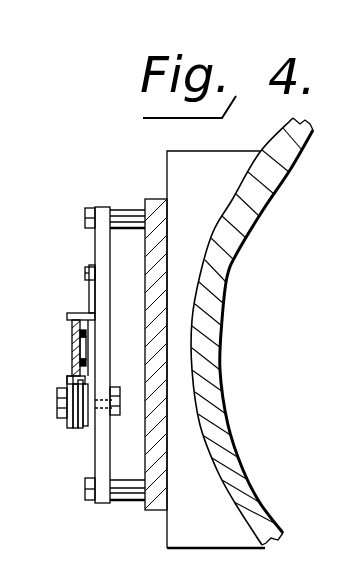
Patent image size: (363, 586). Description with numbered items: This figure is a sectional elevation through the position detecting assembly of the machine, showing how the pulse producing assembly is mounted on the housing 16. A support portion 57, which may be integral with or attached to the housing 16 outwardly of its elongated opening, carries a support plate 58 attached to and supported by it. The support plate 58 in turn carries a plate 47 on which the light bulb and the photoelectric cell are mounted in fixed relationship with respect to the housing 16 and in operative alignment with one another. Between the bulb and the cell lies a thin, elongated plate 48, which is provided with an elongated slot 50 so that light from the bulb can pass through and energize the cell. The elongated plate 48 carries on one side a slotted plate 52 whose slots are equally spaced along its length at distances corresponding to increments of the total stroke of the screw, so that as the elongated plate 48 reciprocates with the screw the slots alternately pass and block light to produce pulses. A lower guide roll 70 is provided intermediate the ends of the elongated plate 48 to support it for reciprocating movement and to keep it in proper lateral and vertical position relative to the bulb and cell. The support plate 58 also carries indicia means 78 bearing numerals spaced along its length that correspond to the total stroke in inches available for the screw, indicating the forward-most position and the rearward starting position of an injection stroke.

The housing 16 is at (262, 140).
The plate 47 is at (105, 206).
The thin elongated plate 48 is at (72, 326).
The elongated slot 50 is at (72, 347).
The slotted plate 52 is at (86, 340).
The support portion 57 is at (181, 163).
The support plate 58 is at (150, 200).
The lower guide roll 70 is at (67, 427).
The indicia means 78 is at (79, 313).